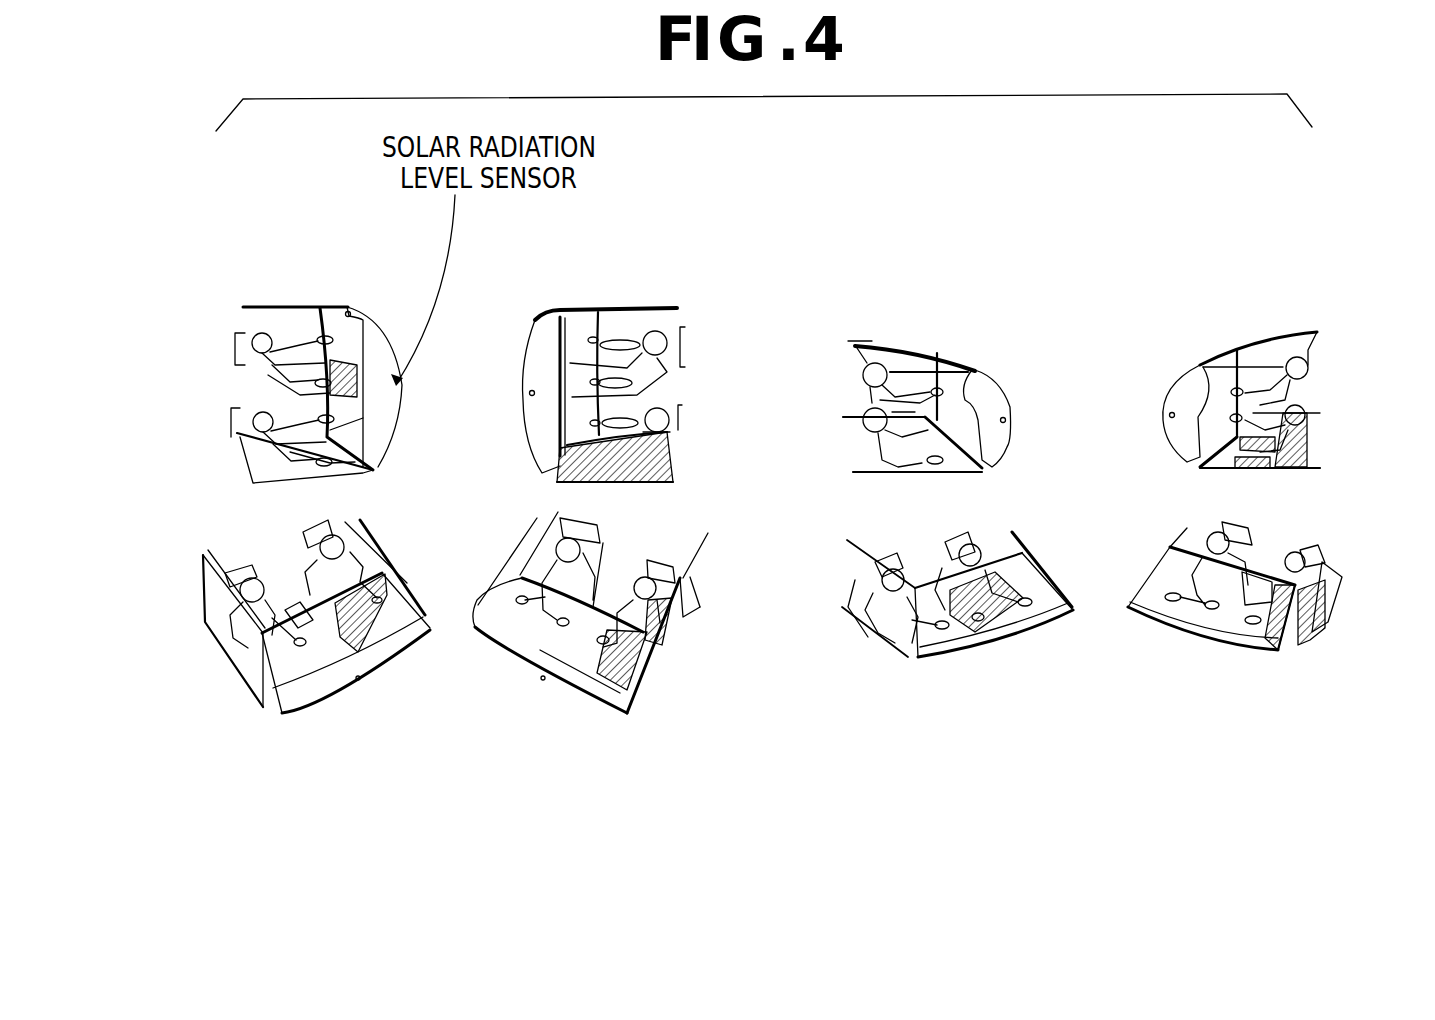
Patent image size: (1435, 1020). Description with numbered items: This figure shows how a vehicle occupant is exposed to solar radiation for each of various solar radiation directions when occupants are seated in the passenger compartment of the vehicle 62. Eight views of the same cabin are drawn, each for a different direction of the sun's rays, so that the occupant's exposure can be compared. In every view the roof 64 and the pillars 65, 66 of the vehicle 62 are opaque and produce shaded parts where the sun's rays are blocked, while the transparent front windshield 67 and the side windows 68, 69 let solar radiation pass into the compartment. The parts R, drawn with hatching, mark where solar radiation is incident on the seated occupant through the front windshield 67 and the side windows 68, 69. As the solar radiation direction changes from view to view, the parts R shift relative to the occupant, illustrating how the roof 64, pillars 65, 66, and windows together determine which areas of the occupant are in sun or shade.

The vehicle 62 is at (247, 304).
The roof 64 is at (290, 318).
The pillar 65 is at (345, 307).
The pillar 66 is at (360, 470).
The front windshield 67 is at (375, 350).
The side window 68 is at (265, 300).
The side window 69 is at (270, 453).
The parts where solar radiation is incident on the occupant R is at (357, 377).